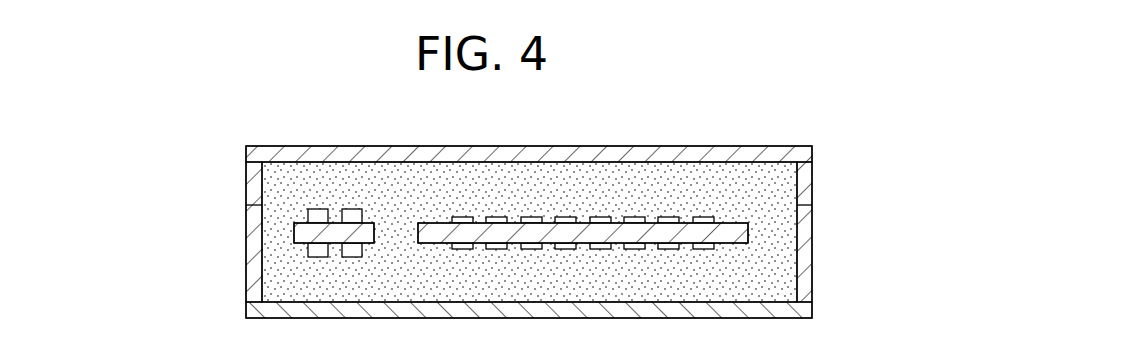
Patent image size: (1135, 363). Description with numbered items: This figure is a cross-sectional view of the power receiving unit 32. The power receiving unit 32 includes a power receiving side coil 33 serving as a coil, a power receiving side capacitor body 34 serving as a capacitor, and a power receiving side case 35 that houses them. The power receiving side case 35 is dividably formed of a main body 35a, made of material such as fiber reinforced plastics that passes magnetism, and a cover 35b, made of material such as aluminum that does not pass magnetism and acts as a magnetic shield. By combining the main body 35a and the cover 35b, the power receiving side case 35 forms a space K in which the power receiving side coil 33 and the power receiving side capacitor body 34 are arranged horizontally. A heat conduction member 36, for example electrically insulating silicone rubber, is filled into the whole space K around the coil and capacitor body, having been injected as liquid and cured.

The power receiving unit 32 is at (813, 168).
The power receiving side coil 33 is at (640, 217).
The power receiving side capacitor body 34 is at (352, 209).
The power receiving side case 35 is at (152, 180).
The main body 35a is at (246, 244).
The cover 35b is at (246, 183).
The heat conduction member 36 is at (757, 198).
The space K is at (537, 193).